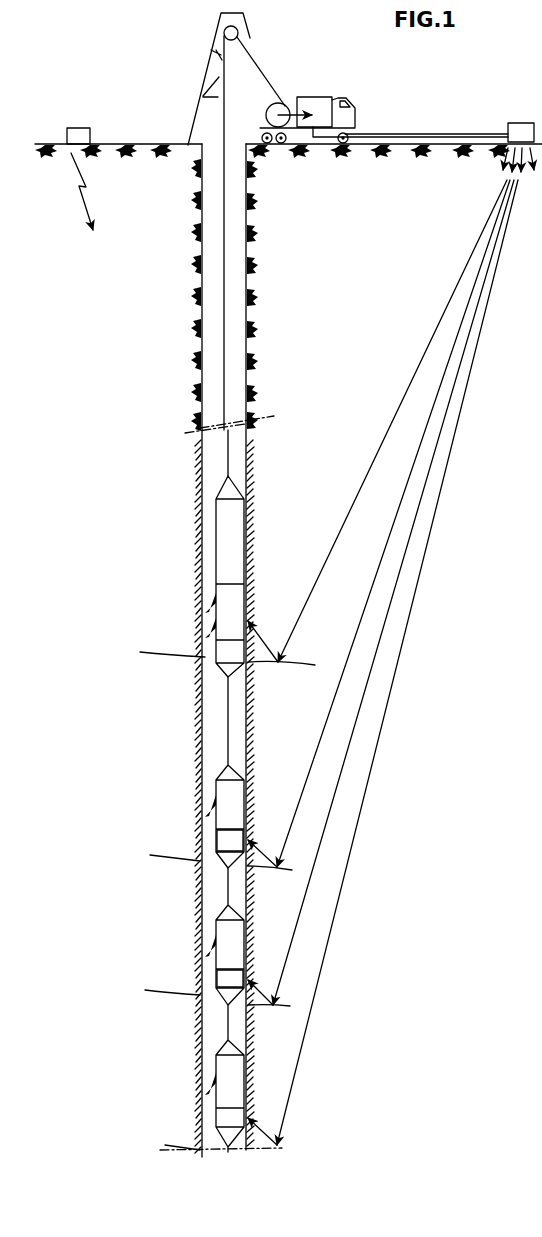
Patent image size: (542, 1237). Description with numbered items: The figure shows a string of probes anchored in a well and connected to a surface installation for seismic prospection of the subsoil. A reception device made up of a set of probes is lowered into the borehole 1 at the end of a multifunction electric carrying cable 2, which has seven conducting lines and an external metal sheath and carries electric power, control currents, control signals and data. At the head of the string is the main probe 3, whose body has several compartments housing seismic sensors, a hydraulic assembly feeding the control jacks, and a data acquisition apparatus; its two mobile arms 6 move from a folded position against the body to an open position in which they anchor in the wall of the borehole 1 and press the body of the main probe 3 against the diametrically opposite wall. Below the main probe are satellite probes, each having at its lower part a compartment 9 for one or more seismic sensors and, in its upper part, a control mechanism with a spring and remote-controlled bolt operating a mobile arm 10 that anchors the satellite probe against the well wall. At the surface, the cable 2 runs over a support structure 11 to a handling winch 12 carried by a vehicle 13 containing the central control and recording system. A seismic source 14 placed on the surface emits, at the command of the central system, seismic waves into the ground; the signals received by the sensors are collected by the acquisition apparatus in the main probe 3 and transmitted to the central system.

The borehole 1 is at (248, 318).
The multifunction electric carrying cable 2 is at (229, 381).
The main probe 3 is at (198, 527).
The mobile arms 6 is at (210, 627).
The compartment for seismic sensors 9 is at (222, 842).
The mobile arm 10 is at (215, 802).
The support structure 11 is at (204, 81).
The handling winch 12 is at (280, 104).
The vehicle 13 is at (318, 97).
The seismic source 14 is at (517, 123).